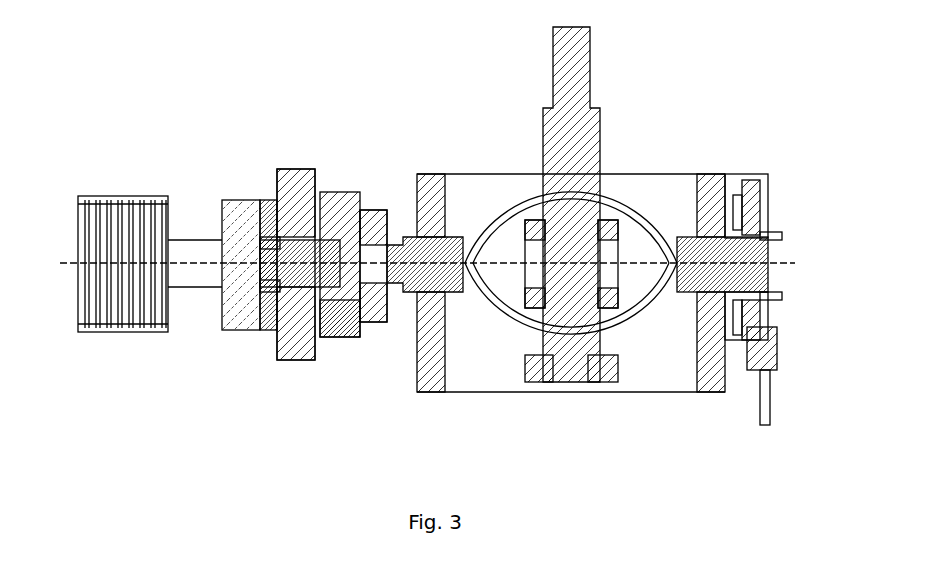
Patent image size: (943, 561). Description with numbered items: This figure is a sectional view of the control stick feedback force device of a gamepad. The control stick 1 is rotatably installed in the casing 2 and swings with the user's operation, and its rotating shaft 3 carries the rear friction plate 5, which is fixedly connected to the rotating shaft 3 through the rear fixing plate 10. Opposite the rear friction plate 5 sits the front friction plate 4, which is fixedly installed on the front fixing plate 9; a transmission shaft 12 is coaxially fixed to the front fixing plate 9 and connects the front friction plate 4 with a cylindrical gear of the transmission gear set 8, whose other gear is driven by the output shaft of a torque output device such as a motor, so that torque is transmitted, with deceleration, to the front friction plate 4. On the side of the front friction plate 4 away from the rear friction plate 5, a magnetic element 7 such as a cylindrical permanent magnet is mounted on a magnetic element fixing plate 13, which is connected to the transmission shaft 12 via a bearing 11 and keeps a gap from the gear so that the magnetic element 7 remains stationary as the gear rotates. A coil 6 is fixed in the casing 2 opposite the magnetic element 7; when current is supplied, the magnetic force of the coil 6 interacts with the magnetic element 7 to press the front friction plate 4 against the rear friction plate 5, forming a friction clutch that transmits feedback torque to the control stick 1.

The control stick 1 is at (583, 52).
The casing 2 is at (712, 193).
The rotating shaft 3 is at (455, 253).
The front friction plate 4 is at (332, 315).
The rear friction plate 5 is at (347, 206).
The coil 6 is at (86, 287).
The magnetic element 7 is at (228, 315).
The transmission gear set 8 is at (291, 175).
The front fixing plate 9 is at (319, 325).
The rear fixing plate 10 is at (378, 300).
The bearing 11 is at (266, 288).
The transmission shaft 12 is at (298, 255).
The magnetic element fixing plate 13 is at (270, 240).